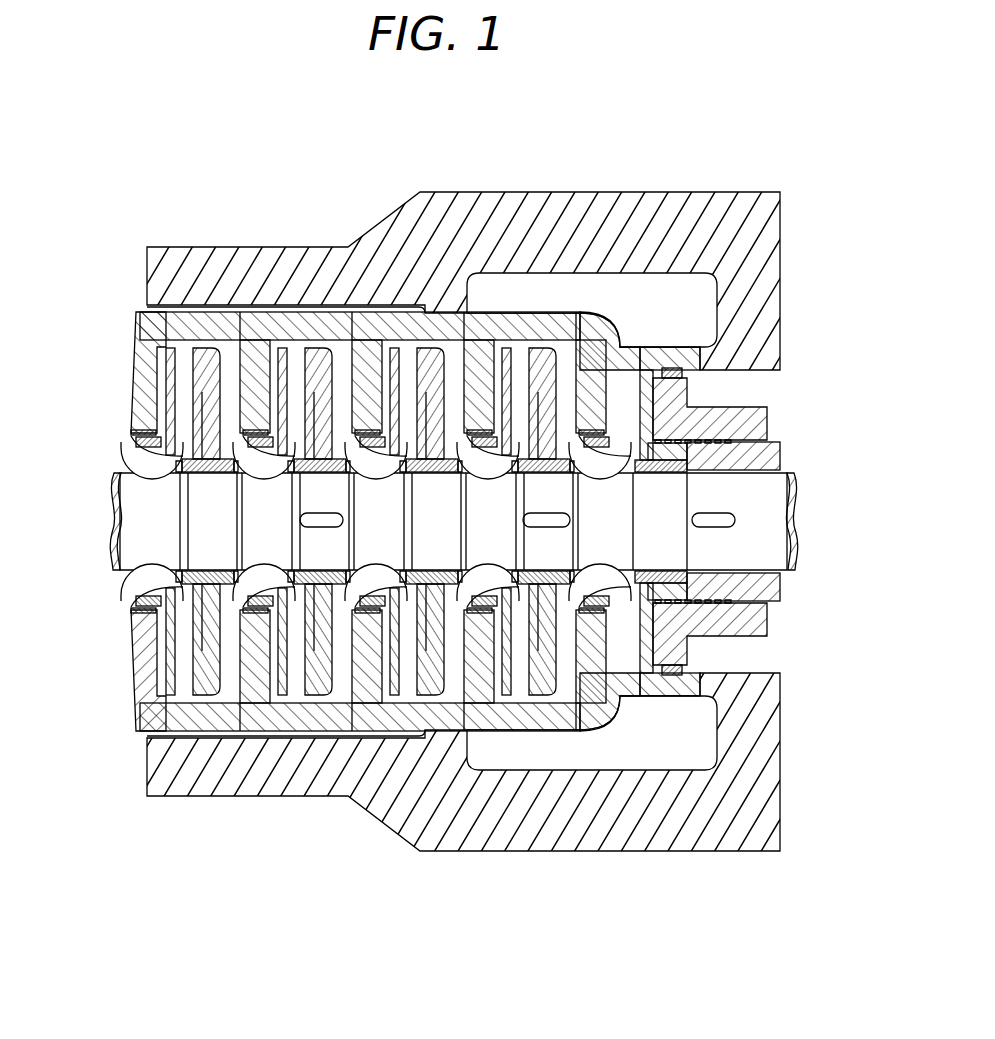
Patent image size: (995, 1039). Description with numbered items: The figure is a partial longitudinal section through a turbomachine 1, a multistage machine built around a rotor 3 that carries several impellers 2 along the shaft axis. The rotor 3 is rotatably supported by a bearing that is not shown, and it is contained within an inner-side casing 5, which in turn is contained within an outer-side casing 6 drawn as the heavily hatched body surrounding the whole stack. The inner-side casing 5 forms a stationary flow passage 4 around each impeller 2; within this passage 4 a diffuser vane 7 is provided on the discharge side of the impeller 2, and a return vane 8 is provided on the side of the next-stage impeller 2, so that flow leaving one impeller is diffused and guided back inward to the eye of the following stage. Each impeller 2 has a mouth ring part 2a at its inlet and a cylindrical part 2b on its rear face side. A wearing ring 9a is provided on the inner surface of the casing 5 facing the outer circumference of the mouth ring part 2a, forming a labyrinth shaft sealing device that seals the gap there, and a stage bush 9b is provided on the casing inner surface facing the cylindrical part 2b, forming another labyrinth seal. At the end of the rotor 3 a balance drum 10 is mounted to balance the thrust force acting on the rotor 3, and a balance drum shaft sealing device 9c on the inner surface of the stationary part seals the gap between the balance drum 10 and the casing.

The turbomachine 1 is at (160, 203).
The impeller 2 is at (336, 436).
The mouth ring part 2a is at (180, 466).
The cylindrical part 2b is at (190, 470).
The rotor 3 is at (210, 523).
The stationary flow passage 4 is at (345, 372).
The inner-side casing 5 is at (245, 325).
The outer-side casing 6 is at (537, 205).
The diffuser vane 7 is at (180, 370).
The return vane 8 is at (230, 367).
The wearing ring 9a is at (140, 603).
The stage bush 9b is at (212, 655).
The balance drum shaft sealing device 9c is at (727, 412).
The balance drum 10 is at (770, 587).